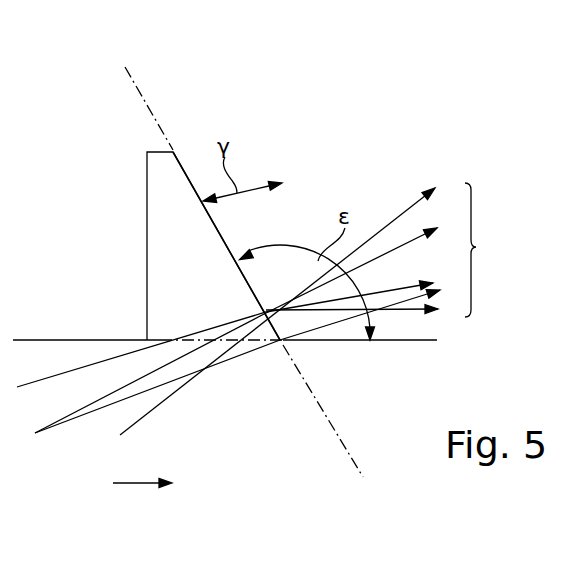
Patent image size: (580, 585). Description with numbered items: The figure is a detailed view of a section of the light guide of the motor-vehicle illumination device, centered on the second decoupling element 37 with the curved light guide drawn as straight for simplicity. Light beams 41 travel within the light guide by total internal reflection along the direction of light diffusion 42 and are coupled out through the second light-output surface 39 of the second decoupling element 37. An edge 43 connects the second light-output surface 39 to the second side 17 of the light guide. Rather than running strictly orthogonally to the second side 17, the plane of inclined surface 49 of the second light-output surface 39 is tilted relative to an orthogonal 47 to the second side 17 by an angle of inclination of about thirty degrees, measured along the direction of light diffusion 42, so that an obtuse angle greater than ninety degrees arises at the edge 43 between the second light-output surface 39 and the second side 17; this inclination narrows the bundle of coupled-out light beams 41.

The second side 17 is at (420, 341).
The second decoupling element 37 is at (163, 186).
The second light-output surface 39 is at (183, 170).
The light beams 41 is at (263, 309).
The direction of light diffusion 42 is at (135, 484).
The edge 43 is at (281, 341).
The orthogonal 47 is at (278, 92).
The plane of inclined surface 49 is at (125, 76).